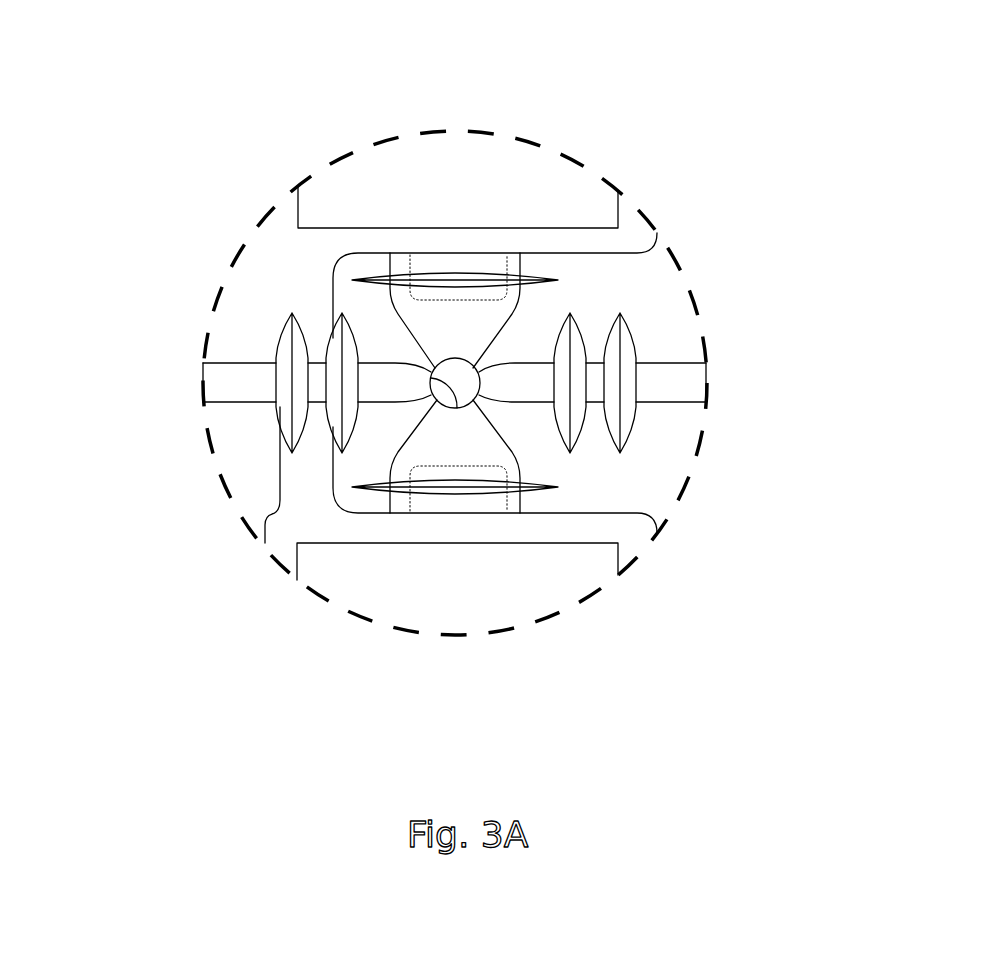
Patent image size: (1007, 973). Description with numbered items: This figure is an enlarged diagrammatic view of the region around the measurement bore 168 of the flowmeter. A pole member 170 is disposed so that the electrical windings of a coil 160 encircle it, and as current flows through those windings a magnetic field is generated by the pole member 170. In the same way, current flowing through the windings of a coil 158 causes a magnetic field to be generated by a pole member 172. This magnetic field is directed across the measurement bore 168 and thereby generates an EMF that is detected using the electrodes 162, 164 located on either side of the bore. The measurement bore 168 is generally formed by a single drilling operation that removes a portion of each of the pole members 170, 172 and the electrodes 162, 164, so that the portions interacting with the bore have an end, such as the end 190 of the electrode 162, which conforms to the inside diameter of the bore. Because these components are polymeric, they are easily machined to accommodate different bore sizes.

The coil 158 is at (497, 175).
The coil 160 is at (442, 597).
The electrode 162 is at (243, 404).
The electrode 164 is at (691, 363).
The measurement bore 168 is at (477, 365).
The pole member 170 is at (400, 502).
The pole member 172 is at (398, 272).
The end 190 is at (457, 408).